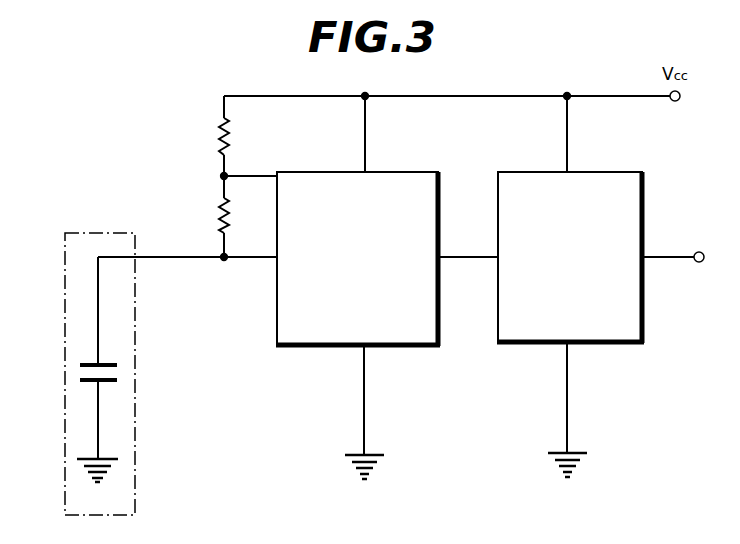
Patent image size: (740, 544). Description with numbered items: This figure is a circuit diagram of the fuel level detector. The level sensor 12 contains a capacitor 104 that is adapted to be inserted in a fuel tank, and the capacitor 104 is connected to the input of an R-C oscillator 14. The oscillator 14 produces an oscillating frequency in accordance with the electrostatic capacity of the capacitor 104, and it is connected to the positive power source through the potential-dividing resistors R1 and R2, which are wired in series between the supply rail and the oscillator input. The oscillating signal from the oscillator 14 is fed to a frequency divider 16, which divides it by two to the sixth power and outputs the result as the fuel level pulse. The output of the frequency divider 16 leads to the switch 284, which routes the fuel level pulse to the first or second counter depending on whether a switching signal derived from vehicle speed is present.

The level sensor 12 is at (64, 316).
The capacitor 104 is at (118, 372).
The oscillator 14 is at (310, 348).
The frequency divider 16 is at (530, 345).
The switch 284 is at (680, 243).
The potential-dividing resistor R1 is at (238, 140).
The potential-dividing resistor R2 is at (232, 207).